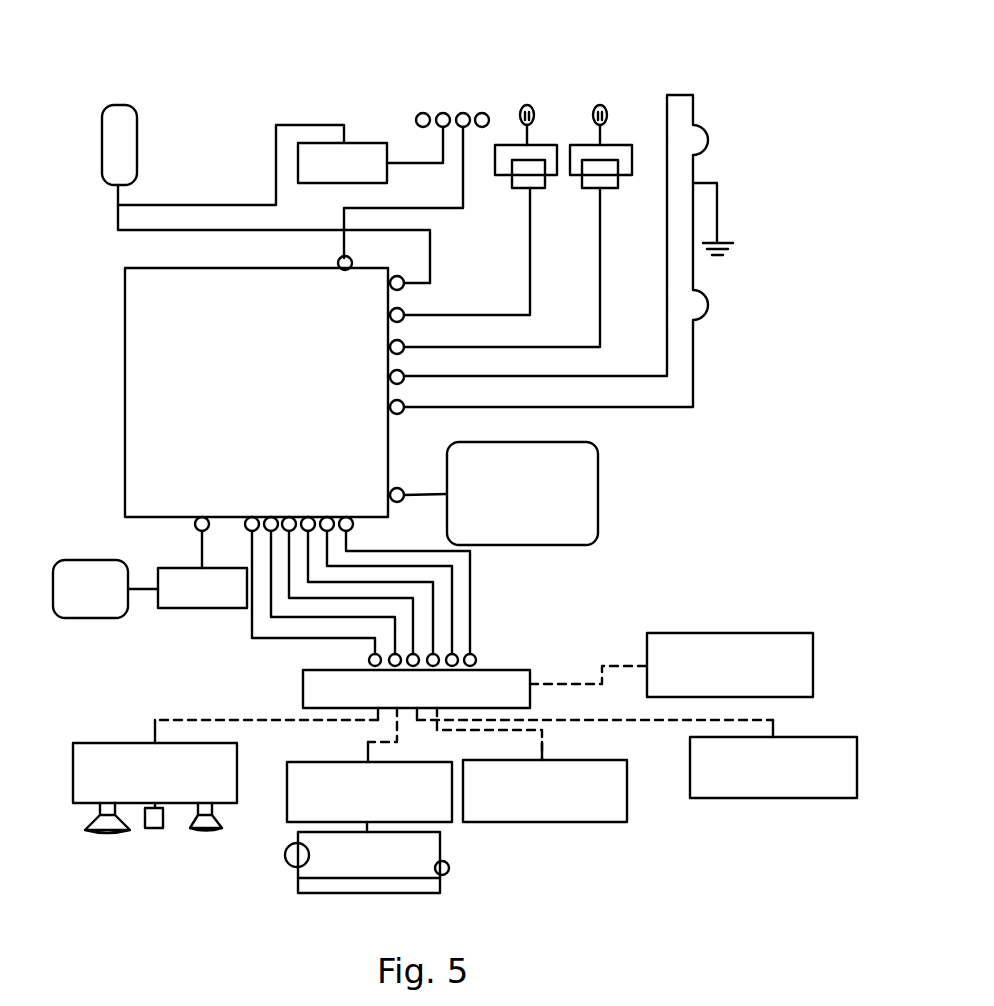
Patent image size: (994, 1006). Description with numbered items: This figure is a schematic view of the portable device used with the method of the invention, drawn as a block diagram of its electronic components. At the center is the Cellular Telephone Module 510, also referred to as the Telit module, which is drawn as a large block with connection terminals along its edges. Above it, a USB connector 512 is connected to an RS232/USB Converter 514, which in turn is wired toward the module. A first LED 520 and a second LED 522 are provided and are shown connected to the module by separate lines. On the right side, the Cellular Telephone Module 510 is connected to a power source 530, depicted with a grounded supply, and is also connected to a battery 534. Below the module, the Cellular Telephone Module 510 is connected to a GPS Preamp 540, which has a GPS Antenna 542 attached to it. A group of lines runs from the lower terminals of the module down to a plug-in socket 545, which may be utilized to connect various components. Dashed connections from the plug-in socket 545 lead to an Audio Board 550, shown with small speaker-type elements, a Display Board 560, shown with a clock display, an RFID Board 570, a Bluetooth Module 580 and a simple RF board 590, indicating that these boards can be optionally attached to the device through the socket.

The Cellular Telephone Module 510 is at (145, 355).
The USB connector 512 is at (125, 125).
The RS232/USB Converter 514 is at (360, 155).
The first LED 520 is at (527, 105).
The second LED 522 is at (600, 105).
The power source 530 is at (700, 182).
The battery 534 is at (568, 488).
The GPS Preamp 540 is at (195, 588).
The GPS Antenna 542 is at (82, 600).
The plug-in socket 545 is at (482, 680).
The Audio Board 550 is at (93, 780).
The Display Board 560 is at (303, 797).
The RFID Board 570 is at (540, 795).
The Bluetooth Module 580 is at (728, 785).
The simple RF board 590 is at (730, 655).